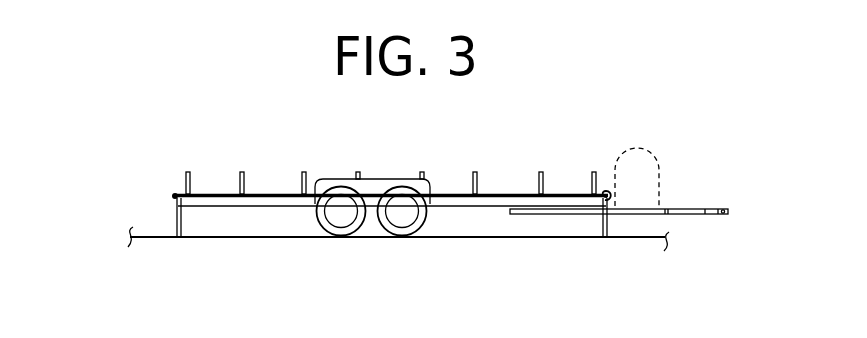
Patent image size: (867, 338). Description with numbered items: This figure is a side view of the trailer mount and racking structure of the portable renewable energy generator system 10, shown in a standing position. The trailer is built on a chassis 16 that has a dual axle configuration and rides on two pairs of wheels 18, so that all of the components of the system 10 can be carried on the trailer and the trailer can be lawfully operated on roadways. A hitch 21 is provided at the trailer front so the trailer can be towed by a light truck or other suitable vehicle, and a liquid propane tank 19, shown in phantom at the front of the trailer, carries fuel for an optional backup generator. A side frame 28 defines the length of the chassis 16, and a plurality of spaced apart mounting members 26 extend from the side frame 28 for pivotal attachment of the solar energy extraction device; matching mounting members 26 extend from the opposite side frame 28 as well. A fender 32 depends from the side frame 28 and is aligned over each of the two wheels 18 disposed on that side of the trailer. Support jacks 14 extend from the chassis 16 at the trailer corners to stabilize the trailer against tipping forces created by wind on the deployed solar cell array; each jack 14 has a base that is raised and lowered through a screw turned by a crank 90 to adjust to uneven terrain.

The portable renewable energy generator system 10 is at (206, 275).
The support jack 14 is at (177, 231).
The chassis 16 is at (257, 200).
The wheel 18 is at (407, 237).
The liquid propane tank 19 is at (660, 168).
The hitch 21 is at (728, 210).
The mounting member 26 is at (358, 177).
The side frame 28 is at (217, 195).
The fender 32 is at (380, 182).
The crank 90 is at (175, 195).